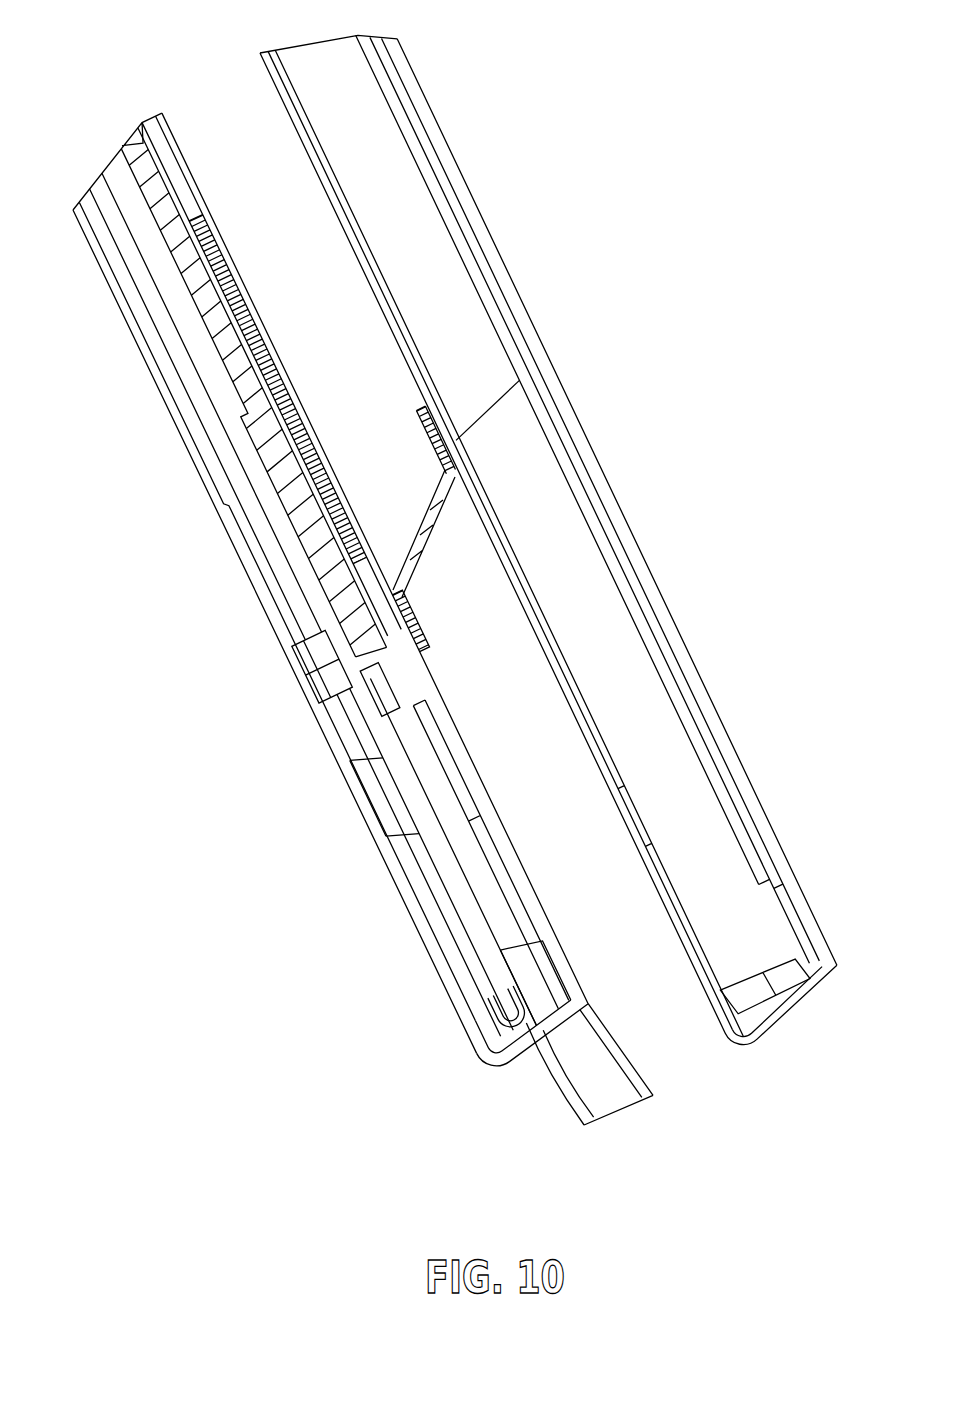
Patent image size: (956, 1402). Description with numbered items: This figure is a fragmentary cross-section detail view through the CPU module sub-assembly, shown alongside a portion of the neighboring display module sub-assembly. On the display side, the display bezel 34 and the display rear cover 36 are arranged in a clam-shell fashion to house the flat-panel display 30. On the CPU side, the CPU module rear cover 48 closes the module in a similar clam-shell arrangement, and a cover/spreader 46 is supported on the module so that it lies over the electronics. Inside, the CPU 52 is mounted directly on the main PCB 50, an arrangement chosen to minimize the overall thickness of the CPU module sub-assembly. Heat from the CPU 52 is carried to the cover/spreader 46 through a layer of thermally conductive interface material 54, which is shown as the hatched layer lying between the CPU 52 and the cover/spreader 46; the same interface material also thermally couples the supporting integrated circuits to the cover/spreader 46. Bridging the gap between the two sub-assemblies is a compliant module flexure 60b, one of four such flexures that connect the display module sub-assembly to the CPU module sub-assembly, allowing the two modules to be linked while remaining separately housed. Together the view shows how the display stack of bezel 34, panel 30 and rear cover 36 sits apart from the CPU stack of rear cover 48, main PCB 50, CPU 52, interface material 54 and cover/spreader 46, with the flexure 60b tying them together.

The flat-panel display 30 is at (433, 233).
The display bezel 34 is at (768, 813).
The display rear cover 36 is at (288, 112).
The cover/spreader 46 is at (458, 737).
The CPU module rear cover 48 is at (447, 973).
The main PCB 50 is at (410, 792).
The CPU 52 is at (323, 558).
The thermally conductive interface material 54 is at (217, 280).
The compliant module flexure 60b is at (413, 570).